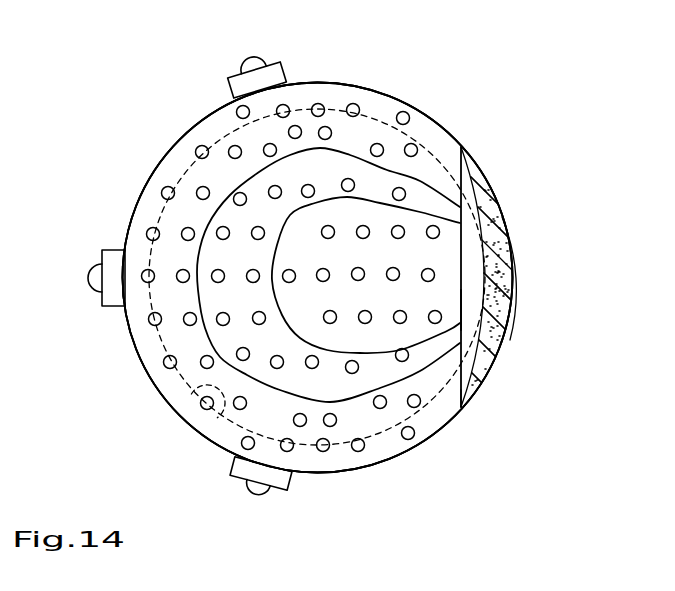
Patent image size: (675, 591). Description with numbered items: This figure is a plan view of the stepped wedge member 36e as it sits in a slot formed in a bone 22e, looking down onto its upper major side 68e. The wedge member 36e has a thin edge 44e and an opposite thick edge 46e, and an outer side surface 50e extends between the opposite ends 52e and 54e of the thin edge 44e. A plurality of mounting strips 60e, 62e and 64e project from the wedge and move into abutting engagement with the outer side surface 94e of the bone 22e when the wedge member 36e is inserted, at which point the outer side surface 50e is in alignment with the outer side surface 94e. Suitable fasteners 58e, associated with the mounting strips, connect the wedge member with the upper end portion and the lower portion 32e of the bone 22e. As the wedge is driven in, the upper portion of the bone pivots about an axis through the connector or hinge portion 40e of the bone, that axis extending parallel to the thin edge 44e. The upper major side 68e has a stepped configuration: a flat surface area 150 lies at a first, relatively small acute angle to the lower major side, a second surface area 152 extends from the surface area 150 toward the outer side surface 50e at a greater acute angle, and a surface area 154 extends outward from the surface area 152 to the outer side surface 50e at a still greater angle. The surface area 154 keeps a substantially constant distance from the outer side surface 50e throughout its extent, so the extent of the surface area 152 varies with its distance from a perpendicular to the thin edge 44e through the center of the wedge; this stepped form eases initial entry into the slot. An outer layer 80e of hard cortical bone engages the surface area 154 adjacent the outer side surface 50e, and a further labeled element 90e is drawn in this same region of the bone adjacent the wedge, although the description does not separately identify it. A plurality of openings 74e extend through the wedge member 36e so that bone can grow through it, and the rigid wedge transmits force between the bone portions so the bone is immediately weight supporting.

The wedge member 36e is at (197, 80).
The fasteners 58e is at (255, 57).
The mounting strip 60e is at (270, 76).
The outer side surface 50e is at (387, 93).
The end of thin edge 52e is at (461, 143).
The outer layer of hard cortical bone 80e is at (478, 182).
The bone 22e is at (523, 207).
The hatched zone 90e is at (473, 260).
The connector or hinge portion 40e is at (510, 280).
The flat surface area 150 is at (433, 290).
The thin edge 44e is at (488, 312).
The lower portion of bone 32e is at (500, 347).
The outer side surface of bone 94e is at (483, 380).
The end of thin edge 54e is at (463, 407).
The upper major side 68e is at (380, 440).
The mounting strip 64e is at (280, 480).
The mounting strip 62e is at (113, 307).
The second surface area 152 is at (243, 338).
The surface area 154 is at (147, 213).
The thick edge 46e is at (160, 165).
The openings 74e is at (270, 150).